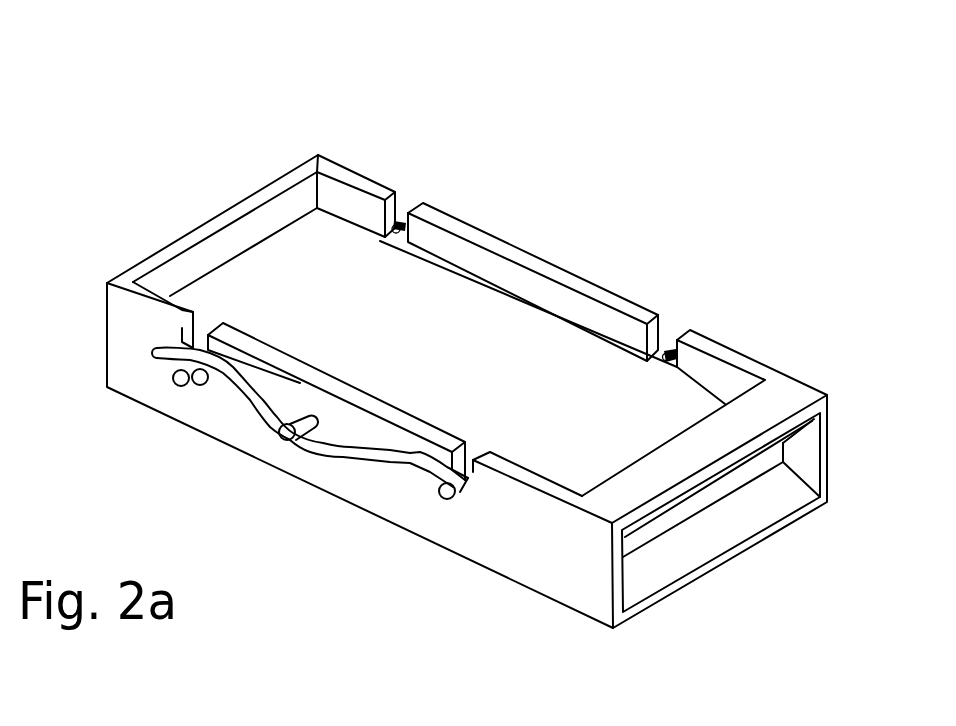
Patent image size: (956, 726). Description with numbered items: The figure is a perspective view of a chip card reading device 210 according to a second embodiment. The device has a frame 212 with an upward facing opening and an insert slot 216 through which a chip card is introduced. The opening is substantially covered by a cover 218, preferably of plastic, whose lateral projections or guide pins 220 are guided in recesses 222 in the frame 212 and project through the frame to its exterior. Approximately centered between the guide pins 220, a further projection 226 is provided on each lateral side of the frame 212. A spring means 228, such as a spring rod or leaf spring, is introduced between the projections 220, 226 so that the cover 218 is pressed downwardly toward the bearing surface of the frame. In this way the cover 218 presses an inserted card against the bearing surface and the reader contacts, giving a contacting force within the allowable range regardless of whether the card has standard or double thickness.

The chip card reading device 210 is at (139, 131).
The frame 212 is at (570, 562).
The insert slot 216 is at (684, 533).
The cover 218 is at (477, 377).
The guide pins 220 is at (398, 232).
The recesses 222 is at (409, 193).
The further projection 226 is at (279, 433).
The spring means 228 is at (382, 453).